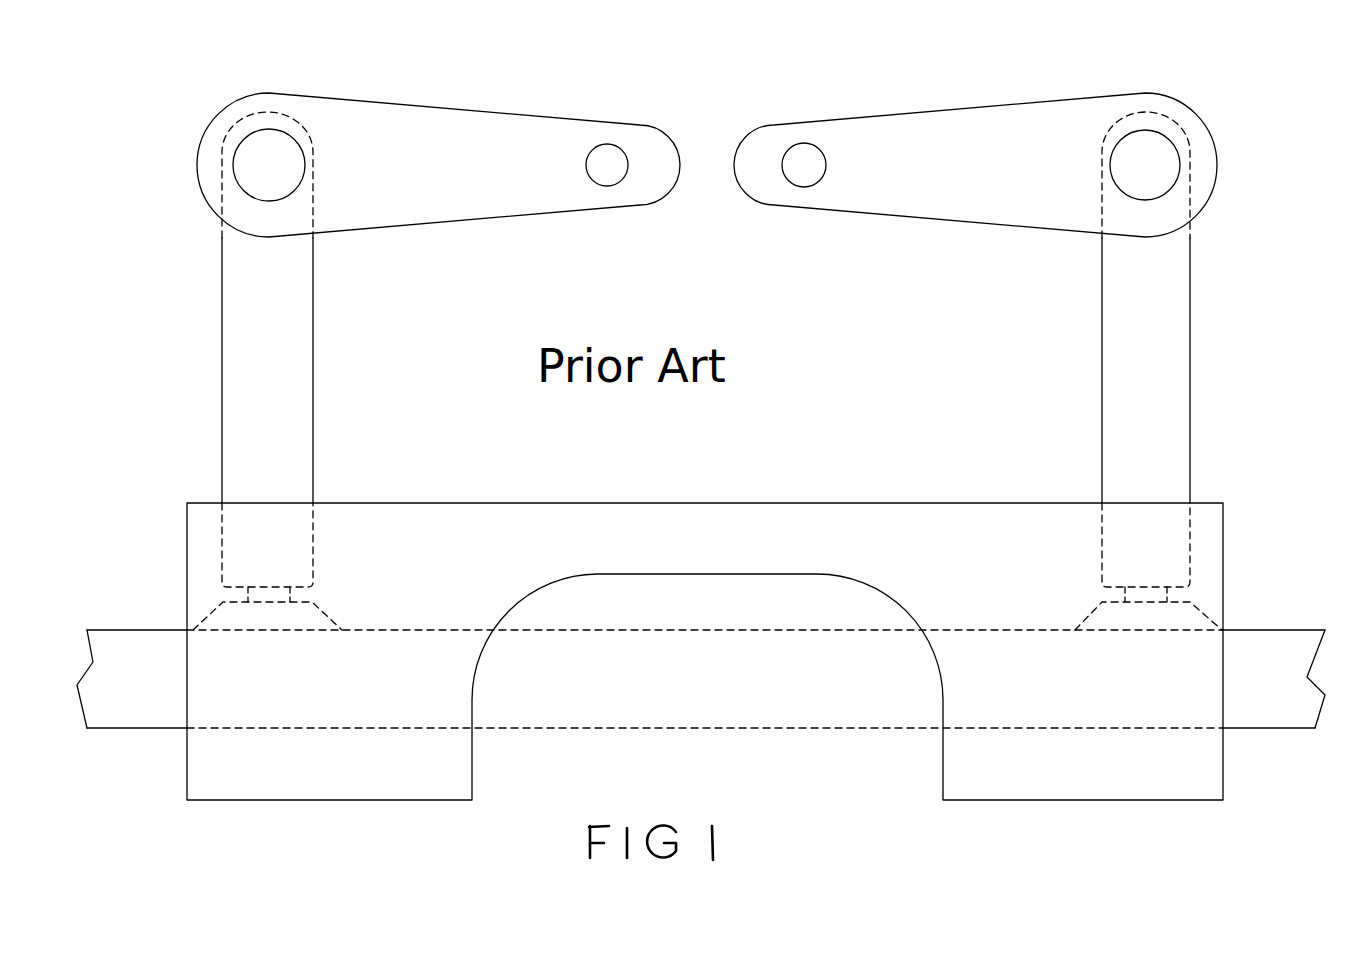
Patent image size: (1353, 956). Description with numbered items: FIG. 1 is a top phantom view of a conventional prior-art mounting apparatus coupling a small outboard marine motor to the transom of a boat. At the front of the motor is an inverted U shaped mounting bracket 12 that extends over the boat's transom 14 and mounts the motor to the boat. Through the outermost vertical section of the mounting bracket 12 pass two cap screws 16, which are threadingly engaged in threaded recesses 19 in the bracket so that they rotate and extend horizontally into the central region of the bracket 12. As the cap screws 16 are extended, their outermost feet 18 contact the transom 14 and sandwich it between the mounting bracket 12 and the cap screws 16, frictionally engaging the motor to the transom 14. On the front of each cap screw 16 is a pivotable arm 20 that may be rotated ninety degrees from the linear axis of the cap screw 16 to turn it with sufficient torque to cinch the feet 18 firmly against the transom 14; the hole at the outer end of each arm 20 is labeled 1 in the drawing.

The pin hole 1 is at (607, 155).
The mounting bracket 12 is at (1178, 785).
The transom 14 is at (817, 715).
The cap screws 16 is at (1180, 343).
The feet 18 is at (270, 601).
The threaded recesses 19 is at (315, 525).
The pivotable arm 20 is at (385, 114).